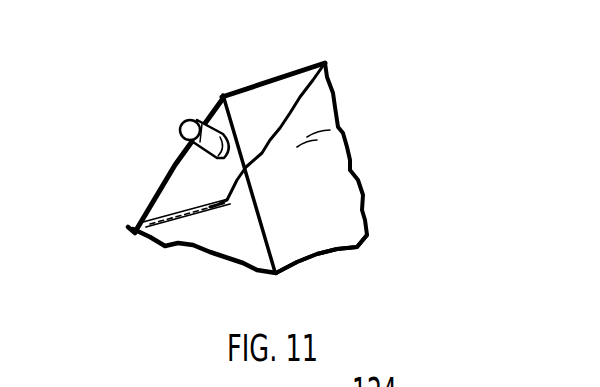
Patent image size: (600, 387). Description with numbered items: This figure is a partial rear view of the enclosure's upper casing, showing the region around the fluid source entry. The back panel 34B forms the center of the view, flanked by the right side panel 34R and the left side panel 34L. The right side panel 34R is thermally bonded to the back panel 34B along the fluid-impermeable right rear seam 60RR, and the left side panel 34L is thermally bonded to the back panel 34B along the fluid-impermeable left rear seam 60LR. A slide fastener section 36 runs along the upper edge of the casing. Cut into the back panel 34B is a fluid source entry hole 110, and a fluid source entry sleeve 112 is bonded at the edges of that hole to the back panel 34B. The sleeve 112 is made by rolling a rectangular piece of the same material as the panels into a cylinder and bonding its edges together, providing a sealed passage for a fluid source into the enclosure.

The right side panel 34R is at (343, 195).
The left side panel 34L is at (182, 193).
The back panel 34B is at (176, 252).
The slide fastener section 36 is at (256, 82).
The left rear seam 60LR is at (178, 161).
The right rear seam 60RR is at (312, 258).
The fluid source entry hole 110 is at (207, 118).
The fluid source entry sleeve 112 is at (180, 128).